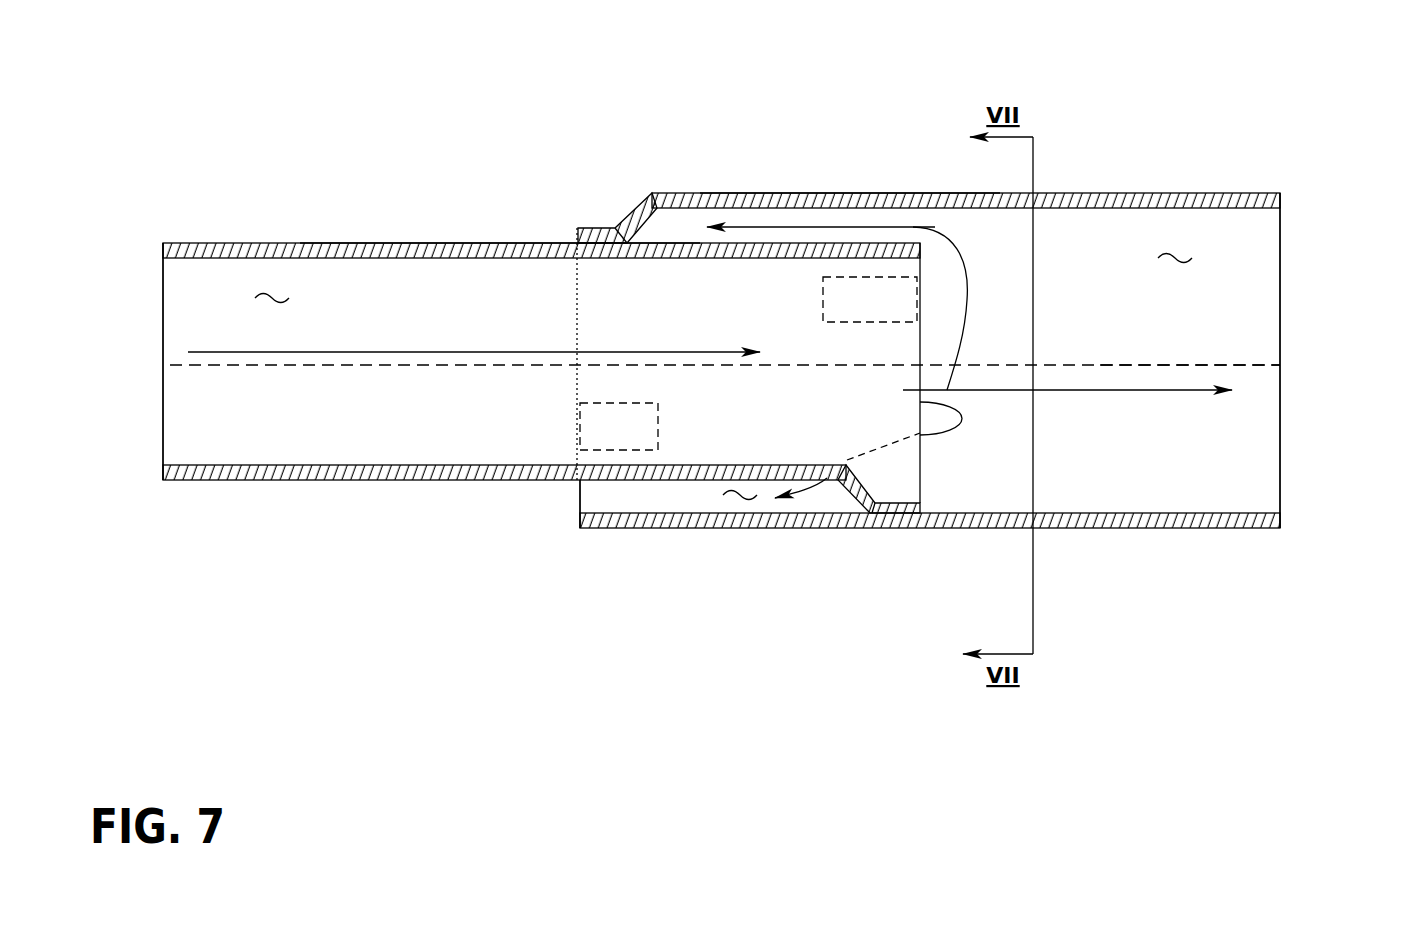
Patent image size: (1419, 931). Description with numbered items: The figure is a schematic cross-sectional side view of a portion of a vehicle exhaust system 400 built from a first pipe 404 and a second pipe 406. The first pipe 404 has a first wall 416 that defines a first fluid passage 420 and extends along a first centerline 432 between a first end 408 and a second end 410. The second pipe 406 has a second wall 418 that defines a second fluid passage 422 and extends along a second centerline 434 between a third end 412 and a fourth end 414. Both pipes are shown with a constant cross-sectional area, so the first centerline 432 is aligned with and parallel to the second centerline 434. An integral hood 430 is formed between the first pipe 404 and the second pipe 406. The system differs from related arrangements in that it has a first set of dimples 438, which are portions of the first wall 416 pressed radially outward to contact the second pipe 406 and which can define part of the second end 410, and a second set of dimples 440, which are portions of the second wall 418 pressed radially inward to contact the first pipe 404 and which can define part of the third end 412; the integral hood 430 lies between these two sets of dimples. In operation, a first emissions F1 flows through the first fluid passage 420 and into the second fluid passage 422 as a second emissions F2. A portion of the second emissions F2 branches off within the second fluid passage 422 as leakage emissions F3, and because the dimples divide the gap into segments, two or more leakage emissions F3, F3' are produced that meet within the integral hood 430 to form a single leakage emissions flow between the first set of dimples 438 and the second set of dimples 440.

The vehicle exhaust system 400 is at (162, 92).
The first pipe 404 is at (338, 490).
The second pipe 406 is at (1198, 533).
The first end 408 is at (163, 302).
The second end 410 is at (958, 407).
The third end 412 is at (580, 503).
The fourth end 414 is at (1280, 485).
The first wall 416 is at (422, 243).
The second wall 418 is at (735, 193).
The first fluid passage 420 is at (272, 296).
The second fluid passage 422 is at (1190, 256).
The integral hood 430 is at (737, 500).
The first centerline 432 is at (228, 366).
The second centerline 434 is at (1248, 365).
The first set of dimples 438 is at (884, 276).
The second set of dimples 440 is at (578, 243).
The first emissions F1 is at (510, 352).
The second emissions F2 is at (1150, 392).
The leakage emissions F3 is at (837, 223).
The leakage emissions F3' is at (894, 519).